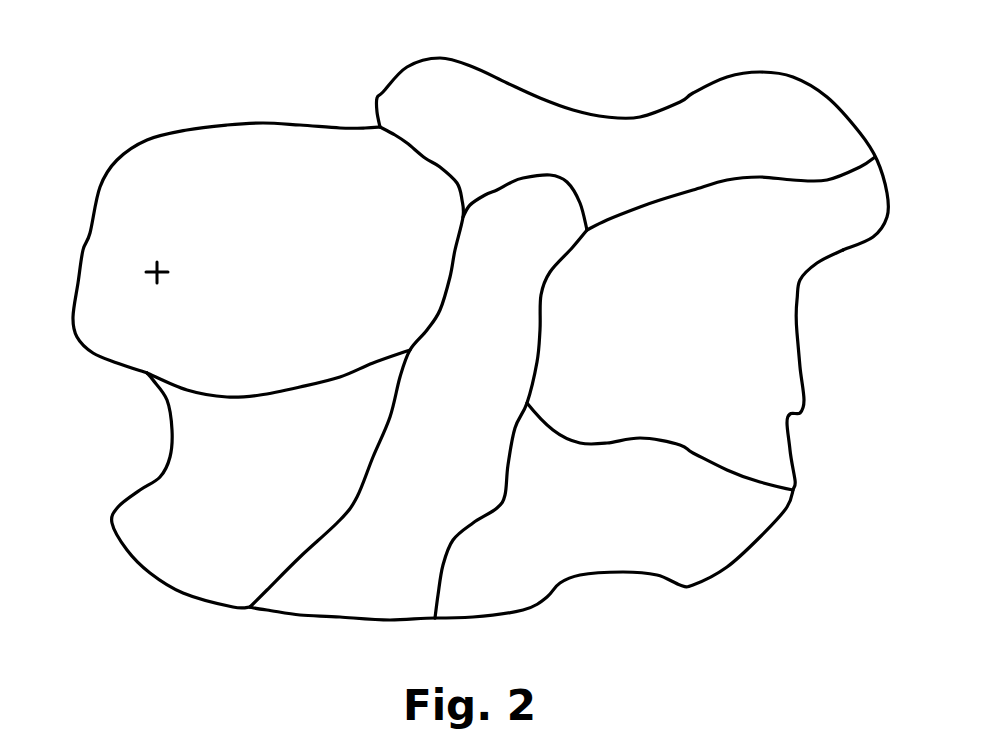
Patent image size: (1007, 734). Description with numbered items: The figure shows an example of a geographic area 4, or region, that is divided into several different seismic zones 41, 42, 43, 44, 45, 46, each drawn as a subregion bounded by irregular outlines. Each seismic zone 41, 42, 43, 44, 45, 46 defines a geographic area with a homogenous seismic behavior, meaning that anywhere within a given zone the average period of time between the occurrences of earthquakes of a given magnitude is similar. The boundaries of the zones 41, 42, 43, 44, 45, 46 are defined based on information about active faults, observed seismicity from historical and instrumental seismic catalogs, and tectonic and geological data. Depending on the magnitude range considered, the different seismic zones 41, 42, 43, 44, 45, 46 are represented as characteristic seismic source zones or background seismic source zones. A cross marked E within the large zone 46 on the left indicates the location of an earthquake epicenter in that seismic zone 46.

The geographic area 4 is at (123, 427).
The seismic zone 41 is at (187, 540).
The seismic zone 42 is at (337, 600).
The seismic zone 43 is at (707, 548).
The seismic zone 44 is at (763, 343).
The seismic zone 45 is at (622, 137).
The seismic zone 46 is at (163, 180).
The earthquake epicenter location E is at (157, 274).